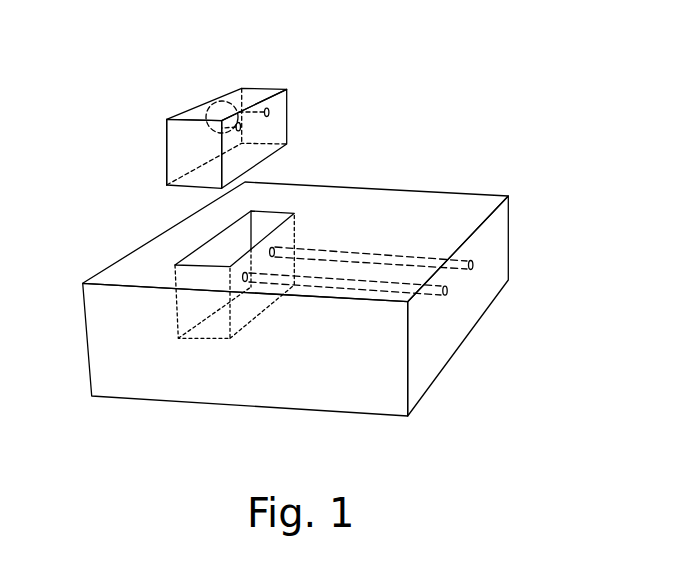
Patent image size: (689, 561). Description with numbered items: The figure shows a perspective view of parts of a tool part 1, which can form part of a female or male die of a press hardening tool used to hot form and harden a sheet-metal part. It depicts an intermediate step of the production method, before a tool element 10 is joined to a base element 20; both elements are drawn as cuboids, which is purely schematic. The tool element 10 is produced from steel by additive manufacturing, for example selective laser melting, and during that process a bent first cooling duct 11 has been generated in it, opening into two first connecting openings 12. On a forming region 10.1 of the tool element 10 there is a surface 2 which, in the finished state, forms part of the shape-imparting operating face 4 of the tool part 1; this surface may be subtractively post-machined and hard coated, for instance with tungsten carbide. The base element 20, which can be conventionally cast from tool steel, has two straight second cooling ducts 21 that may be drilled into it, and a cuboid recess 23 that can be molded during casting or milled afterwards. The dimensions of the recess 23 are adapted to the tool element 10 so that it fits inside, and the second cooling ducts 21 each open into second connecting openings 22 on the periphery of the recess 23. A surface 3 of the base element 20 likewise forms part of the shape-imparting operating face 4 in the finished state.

The tool part 1 is at (535, 58).
The surface 2 is at (228, 88).
The surface 3 is at (139, 268).
The operating face 4 is at (271, 250).
The tool element 10 is at (286, 100).
The forming region 10.1 is at (164, 120).
The first cooling duct 11 is at (218, 106).
The first connecting openings 12 is at (276, 113).
The base element 20 is at (342, 405).
The second cooling ducts 21 is at (358, 250).
The second connecting openings 22 is at (266, 252).
The recess 23 is at (201, 257).